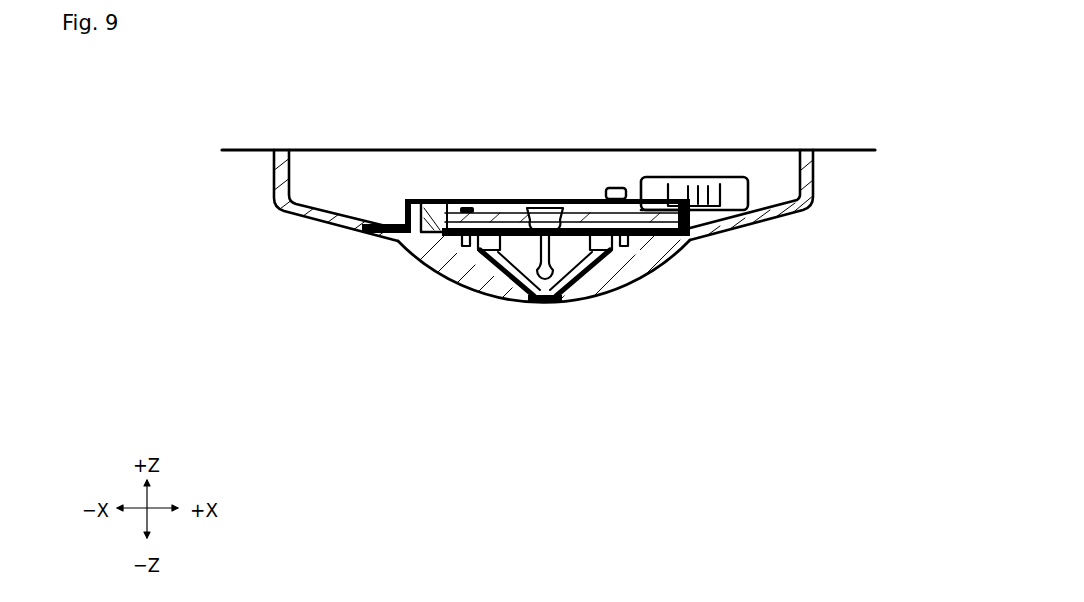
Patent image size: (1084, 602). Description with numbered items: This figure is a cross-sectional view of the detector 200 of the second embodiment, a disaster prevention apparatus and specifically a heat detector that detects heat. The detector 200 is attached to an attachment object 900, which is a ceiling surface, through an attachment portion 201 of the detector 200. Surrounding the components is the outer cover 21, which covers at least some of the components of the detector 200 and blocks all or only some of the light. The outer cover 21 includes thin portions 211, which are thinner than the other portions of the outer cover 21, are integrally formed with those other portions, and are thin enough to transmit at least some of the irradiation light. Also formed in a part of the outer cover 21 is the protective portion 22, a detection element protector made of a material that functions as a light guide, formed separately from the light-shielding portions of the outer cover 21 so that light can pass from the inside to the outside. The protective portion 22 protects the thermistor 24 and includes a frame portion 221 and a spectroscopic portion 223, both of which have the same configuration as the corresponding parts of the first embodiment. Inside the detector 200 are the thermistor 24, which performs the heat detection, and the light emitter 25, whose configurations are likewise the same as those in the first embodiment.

The attachment object 900 is at (843, 153).
The detector 200 is at (748, 308).
The outer cover 21 is at (723, 235).
The thin portions 211 is at (337, 225).
The attachment portion 201 is at (667, 150).
The protective portion 22 is at (526, 289).
The spectroscopic portion 223 is at (415, 195).
The frame portion 221 is at (478, 286).
The thermistor 24 is at (574, 298).
The light emitter 25 is at (462, 190).